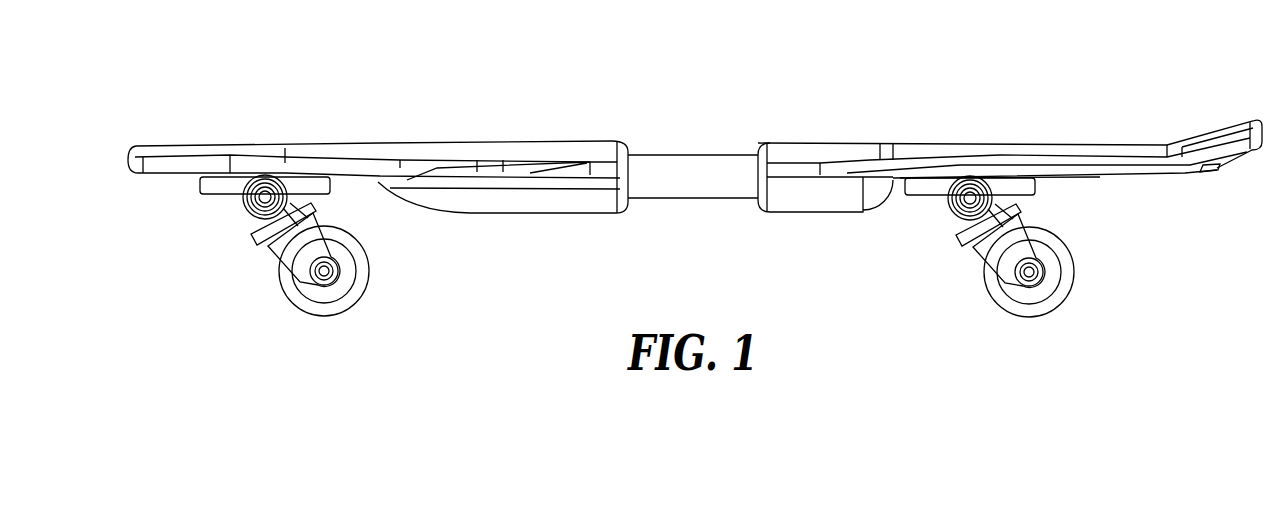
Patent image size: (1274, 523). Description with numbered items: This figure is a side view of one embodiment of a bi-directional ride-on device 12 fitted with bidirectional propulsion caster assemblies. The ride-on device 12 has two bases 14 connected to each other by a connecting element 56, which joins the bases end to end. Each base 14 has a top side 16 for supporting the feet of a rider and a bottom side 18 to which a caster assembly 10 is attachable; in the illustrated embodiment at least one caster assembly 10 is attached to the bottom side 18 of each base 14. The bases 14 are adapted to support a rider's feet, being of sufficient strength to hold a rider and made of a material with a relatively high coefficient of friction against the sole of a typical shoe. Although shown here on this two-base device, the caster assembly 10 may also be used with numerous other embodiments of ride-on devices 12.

The bidirectional propulsion caster assembly 10 is at (192, 242).
The ride-on device 12 is at (178, 94).
The base 14 is at (305, 142).
The top side 16 is at (1140, 144).
The bottom side 18 is at (1123, 169).
The connecting element 56 is at (712, 152).